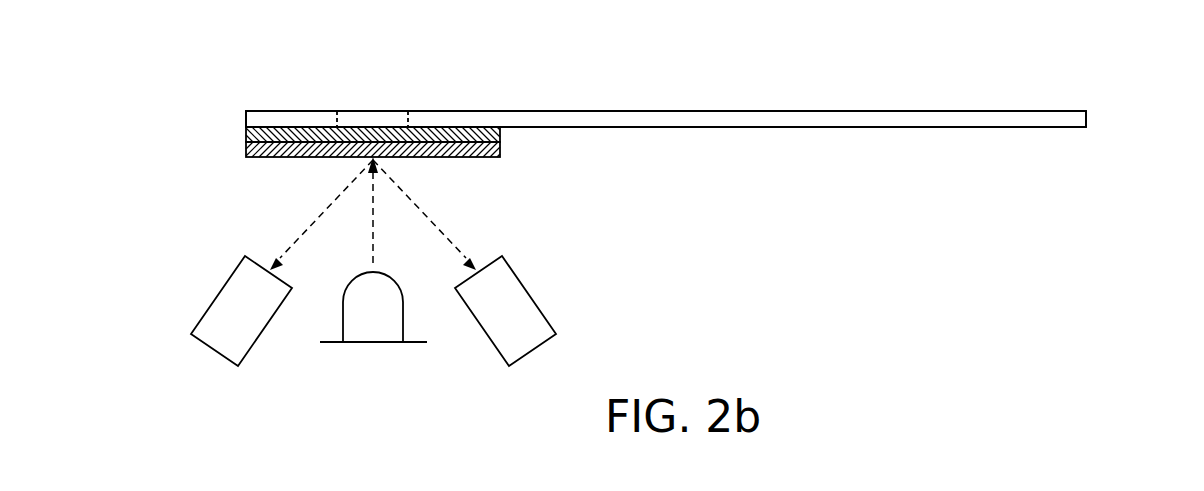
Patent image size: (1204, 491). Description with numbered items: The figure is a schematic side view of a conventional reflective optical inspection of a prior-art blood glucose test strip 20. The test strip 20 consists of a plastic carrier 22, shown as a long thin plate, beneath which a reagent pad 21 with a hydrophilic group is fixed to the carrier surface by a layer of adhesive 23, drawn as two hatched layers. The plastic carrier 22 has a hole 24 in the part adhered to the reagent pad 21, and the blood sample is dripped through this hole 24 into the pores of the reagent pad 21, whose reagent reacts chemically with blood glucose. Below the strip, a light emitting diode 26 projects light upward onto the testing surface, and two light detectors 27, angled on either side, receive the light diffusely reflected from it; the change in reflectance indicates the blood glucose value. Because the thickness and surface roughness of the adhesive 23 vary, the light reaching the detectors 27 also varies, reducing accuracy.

The test strip 20 is at (1107, 92).
The reagent pad 21 is at (253, 147).
The plastic carrier 22 is at (253, 118).
The adhesive 23 is at (253, 134).
The hole 24 is at (372, 106).
The light emitting diode 26 is at (373, 330).
The light detector 27 is at (218, 340).